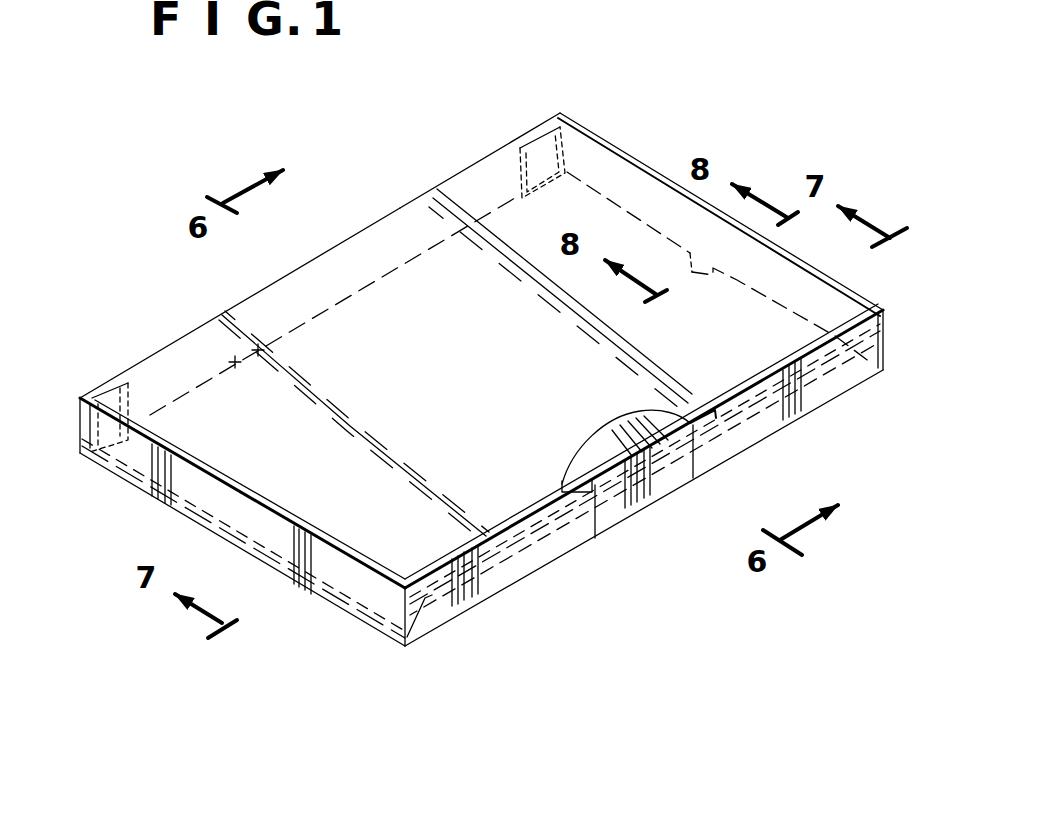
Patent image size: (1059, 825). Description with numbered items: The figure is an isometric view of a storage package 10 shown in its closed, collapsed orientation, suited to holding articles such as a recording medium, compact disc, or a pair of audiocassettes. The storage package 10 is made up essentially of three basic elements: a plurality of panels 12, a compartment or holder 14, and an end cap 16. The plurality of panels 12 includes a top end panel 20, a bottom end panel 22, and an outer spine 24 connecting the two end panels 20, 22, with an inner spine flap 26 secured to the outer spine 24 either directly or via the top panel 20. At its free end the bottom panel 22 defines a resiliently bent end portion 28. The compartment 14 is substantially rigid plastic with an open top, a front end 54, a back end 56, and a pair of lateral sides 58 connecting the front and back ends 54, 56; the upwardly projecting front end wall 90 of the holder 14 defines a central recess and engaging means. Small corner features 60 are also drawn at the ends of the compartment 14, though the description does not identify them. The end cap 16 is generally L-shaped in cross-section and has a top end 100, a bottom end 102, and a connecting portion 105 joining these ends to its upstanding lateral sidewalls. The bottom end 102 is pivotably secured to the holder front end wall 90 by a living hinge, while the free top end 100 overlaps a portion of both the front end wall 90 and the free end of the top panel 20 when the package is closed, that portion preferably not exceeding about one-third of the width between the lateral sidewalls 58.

The storage package 10 is at (342, 198).
The plurality of panels 12 is at (165, 377).
The compartment or holder 14 is at (256, 396).
The end cap 16 is at (653, 434).
The top end panel 20 is at (501, 230).
The bottom end panel 22 is at (386, 594).
The outer spine 24 is at (322, 253).
The inner spine flap 26 is at (515, 130).
The resiliently bent end portion 28 is at (430, 605).
The front end 54 is at (822, 378).
The back end 56 is at (382, 243).
The lateral sides 58 is at (645, 165).
The notch 60 is at (545, 125).
The front end wall 90 is at (743, 427).
The top end 100 is at (598, 452).
The bottom end 102 is at (597, 532).
The connecting portion 105 is at (625, 498).